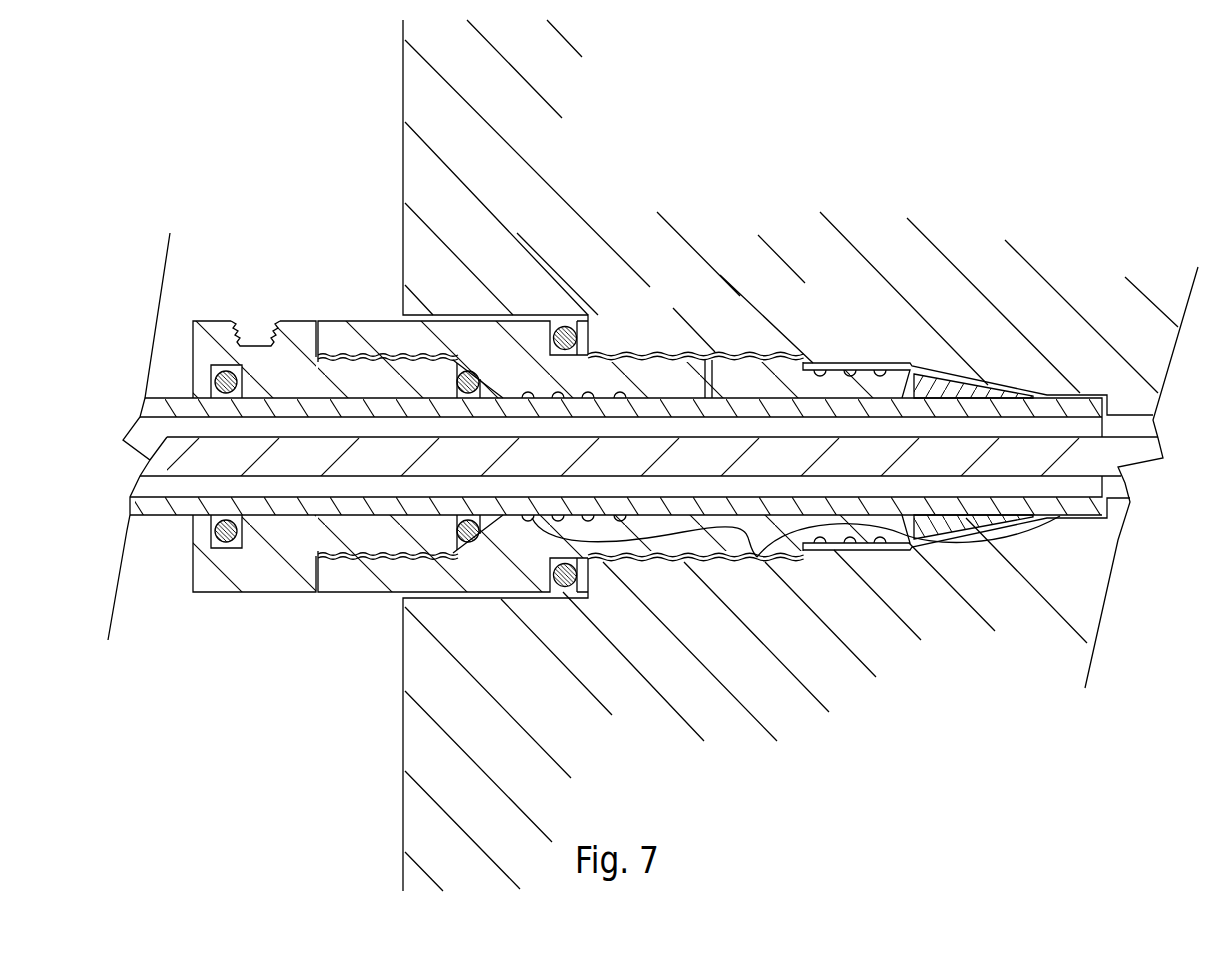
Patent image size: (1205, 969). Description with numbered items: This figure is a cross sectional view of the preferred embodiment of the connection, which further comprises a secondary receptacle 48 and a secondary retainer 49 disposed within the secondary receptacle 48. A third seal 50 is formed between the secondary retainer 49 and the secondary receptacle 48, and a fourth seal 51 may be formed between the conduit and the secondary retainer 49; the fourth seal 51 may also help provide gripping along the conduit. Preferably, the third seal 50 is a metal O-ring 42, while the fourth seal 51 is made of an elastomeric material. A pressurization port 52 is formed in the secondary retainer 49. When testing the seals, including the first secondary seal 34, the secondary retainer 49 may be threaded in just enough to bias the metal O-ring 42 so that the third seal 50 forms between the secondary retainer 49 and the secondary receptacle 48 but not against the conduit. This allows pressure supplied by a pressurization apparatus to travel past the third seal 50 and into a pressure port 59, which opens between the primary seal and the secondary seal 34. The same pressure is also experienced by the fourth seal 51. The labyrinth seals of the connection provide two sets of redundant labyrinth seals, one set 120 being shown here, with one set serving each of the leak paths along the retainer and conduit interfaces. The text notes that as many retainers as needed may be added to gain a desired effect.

The fourth seal 51 is at (213, 381).
The pressurization port 52 is at (260, 319).
The secondary retainer 49 is at (332, 380).
The third seal 50 is at (470, 352).
The secondary receptacle 48 is at (577, 342).
The pressure port 59 is at (704, 363).
The metal O-ring 42 is at (468, 540).
The first secondary seal 34 is at (578, 600).
The set of redundant labyrinth seals 120 is at (757, 557).